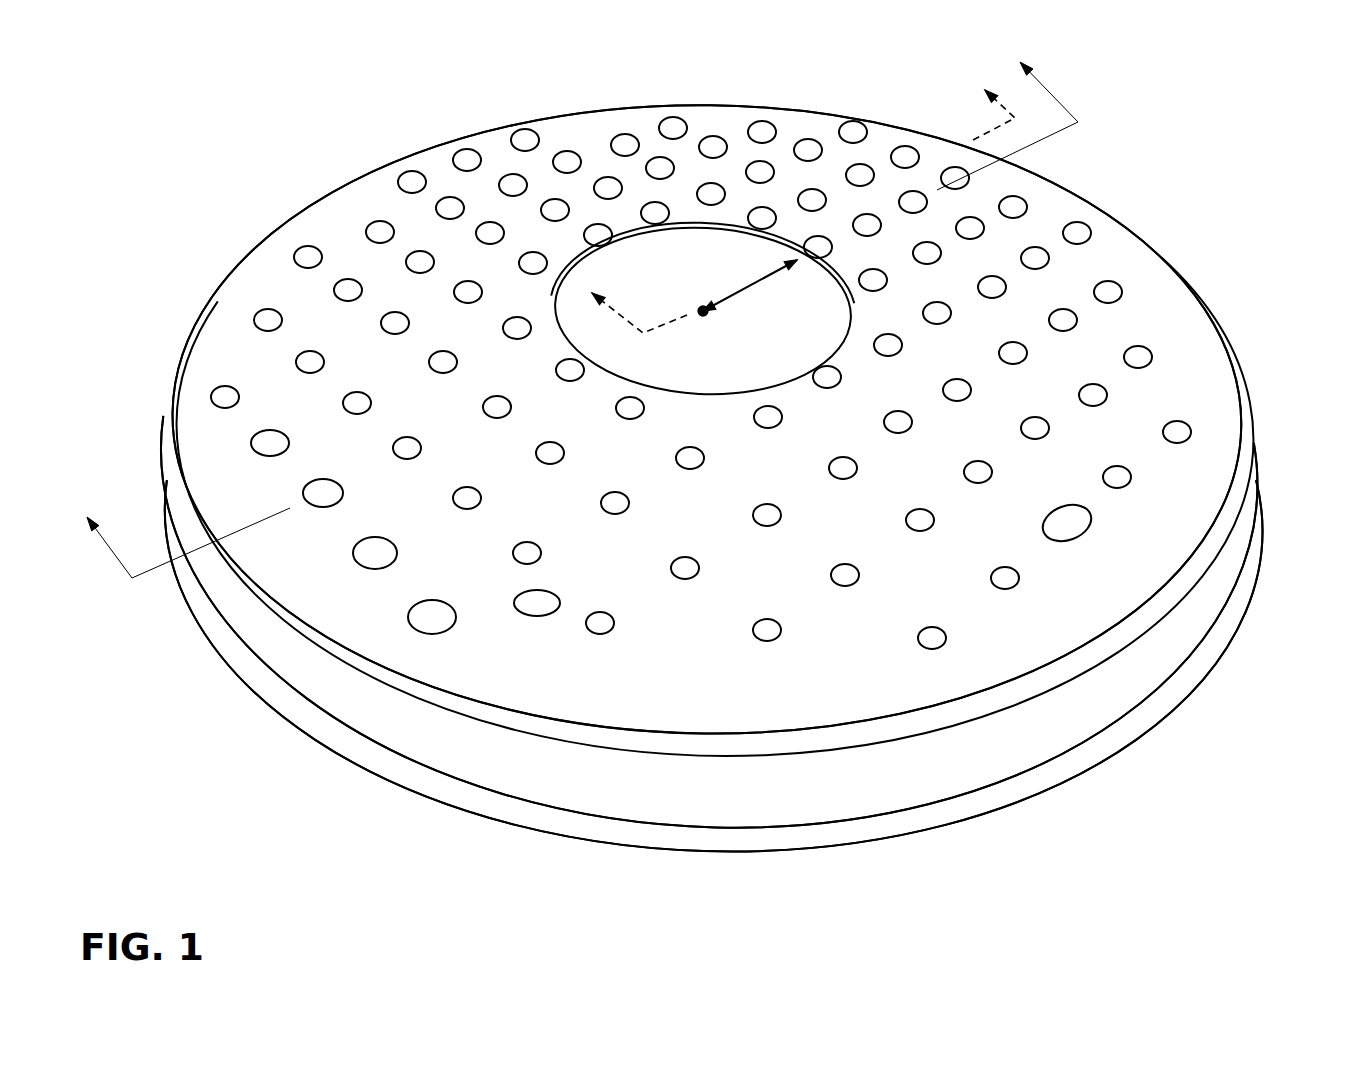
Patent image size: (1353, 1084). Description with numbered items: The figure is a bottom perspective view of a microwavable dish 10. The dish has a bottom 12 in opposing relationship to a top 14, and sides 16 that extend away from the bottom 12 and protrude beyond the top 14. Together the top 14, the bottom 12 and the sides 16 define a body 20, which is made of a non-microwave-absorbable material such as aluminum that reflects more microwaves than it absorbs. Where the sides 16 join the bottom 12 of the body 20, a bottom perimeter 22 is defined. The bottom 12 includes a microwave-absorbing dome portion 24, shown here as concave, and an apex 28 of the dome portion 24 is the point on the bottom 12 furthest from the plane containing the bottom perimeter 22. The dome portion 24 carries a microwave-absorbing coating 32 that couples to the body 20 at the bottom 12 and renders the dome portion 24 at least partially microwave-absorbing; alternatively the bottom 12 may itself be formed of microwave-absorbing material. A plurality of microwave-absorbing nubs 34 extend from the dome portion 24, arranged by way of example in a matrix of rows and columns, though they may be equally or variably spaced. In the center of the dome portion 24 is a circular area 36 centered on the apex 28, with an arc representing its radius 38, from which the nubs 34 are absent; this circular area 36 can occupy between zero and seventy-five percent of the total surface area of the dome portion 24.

The microwavable dish 10 is at (1206, 91).
The bottom 12 is at (1200, 307).
The top 14 is at (983, 705).
The sides 16 is at (1247, 548).
The body 20 is at (330, 753).
The bottom perimeter 22 is at (1242, 423).
The dome portion 24 is at (207, 313).
The apex 28 is at (703, 308).
The microwave-absorbing coating 32 is at (413, 148).
The microwave-absorbing nubs 34 is at (305, 255).
The circular area 36 is at (641, 227).
The radius 38 is at (762, 282).